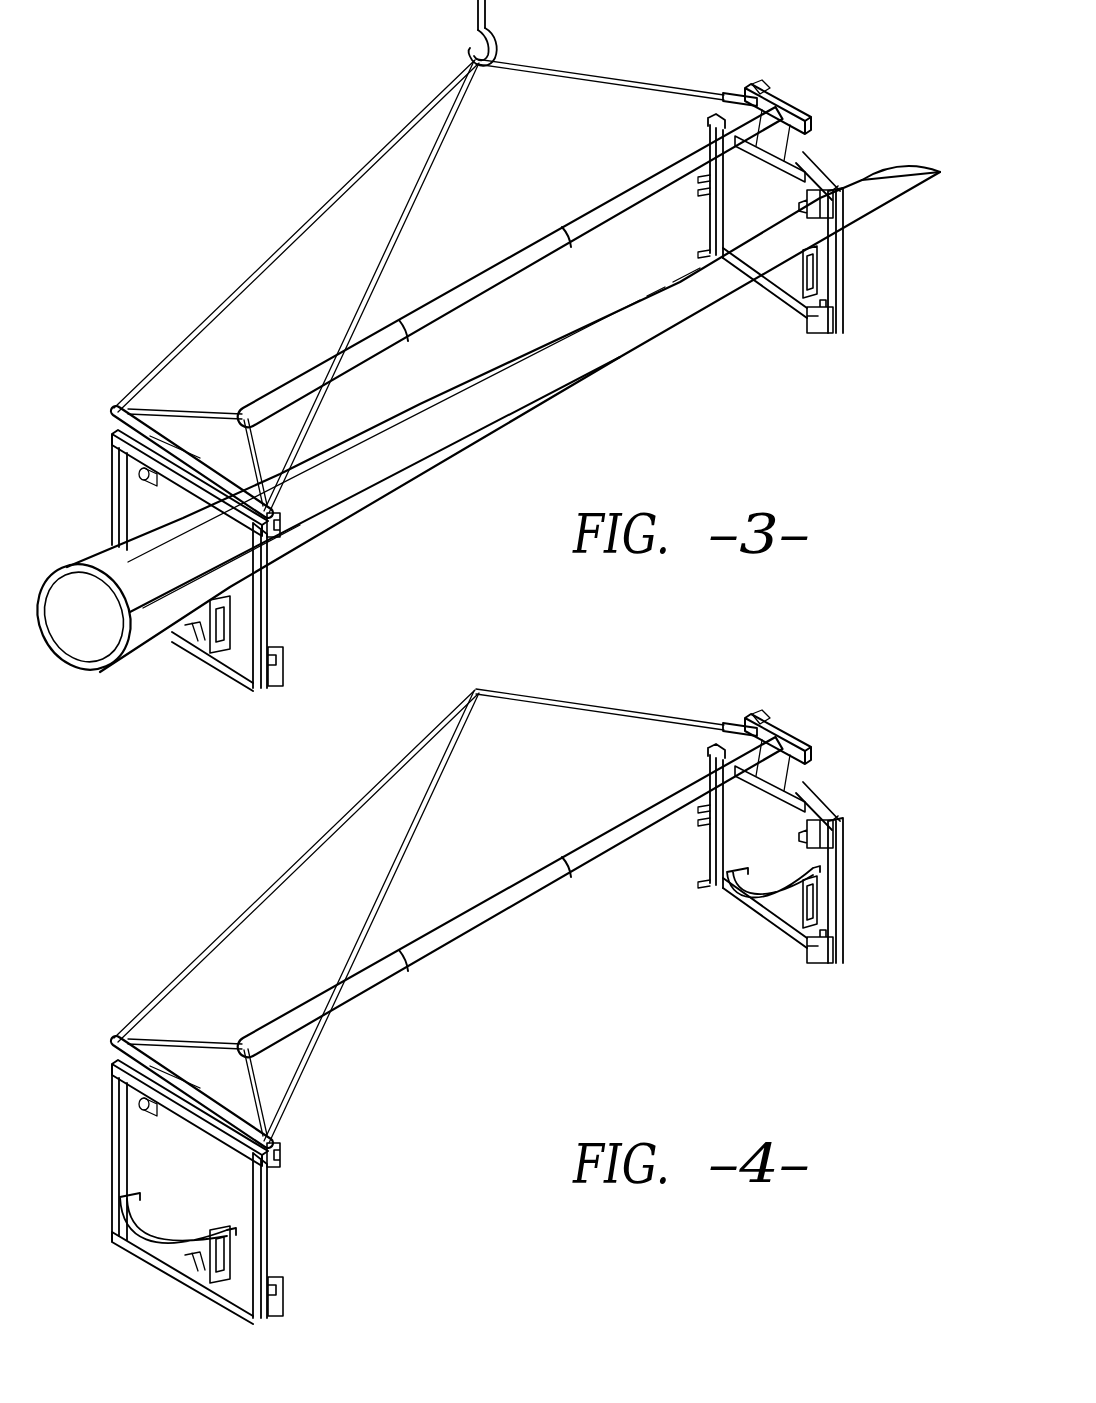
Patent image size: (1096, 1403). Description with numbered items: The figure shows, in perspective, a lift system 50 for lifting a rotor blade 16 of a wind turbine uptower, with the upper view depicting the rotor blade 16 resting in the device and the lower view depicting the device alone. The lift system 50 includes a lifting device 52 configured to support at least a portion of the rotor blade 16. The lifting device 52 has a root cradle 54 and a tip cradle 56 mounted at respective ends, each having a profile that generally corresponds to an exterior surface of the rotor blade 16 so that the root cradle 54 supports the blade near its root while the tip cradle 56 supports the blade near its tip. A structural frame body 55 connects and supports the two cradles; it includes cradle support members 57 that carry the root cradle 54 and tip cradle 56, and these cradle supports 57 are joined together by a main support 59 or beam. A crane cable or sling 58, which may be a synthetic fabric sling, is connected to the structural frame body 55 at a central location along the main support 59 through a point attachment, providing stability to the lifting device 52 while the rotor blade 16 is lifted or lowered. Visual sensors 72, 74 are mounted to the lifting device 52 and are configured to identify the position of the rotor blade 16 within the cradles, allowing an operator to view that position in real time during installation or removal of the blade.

In FIG. 3, the rotor blade 16 is at (613, 390).
In FIG. 4, the lift system 50 is at (180, 1109).
In FIG. 3, the lifting device 52 is at (840, 110).
In FIG. 4, the lifting device 52 is at (788, 792).
In FIG. 3, the root cradle 54 is at (208, 664).
In FIG. 4, the root cradle 54 is at (177, 1275).
In FIG. 3, the structural frame body 55 is at (583, 205).
In FIG. 4, the structural frame body 55 is at (510, 897).
In FIG. 3, the tip cradle 56 is at (783, 310).
In FIG. 4, the tip cradle 56 is at (794, 945).
In FIG. 3, the cradle support member 57 is at (847, 266).
In FIG. 4, the cradle support member 57 is at (582, 1068).
In FIG. 3, the crane cable or sling 58 is at (326, 194).
In FIG. 4, the crane cable or sling 58 is at (442, 916).
In FIG. 3, the main support 59 is at (470, 275).
In FIG. 4, the main support 59 is at (485, 896).
In FIG. 3, the visual sensor 72 is at (846, 320).
In FIG. 4, the visual sensor 72 is at (581, 1146).
In FIG. 3, the visual sensor 74 is at (832, 206).
In FIG. 4, the visual sensor 74 is at (589, 1016).